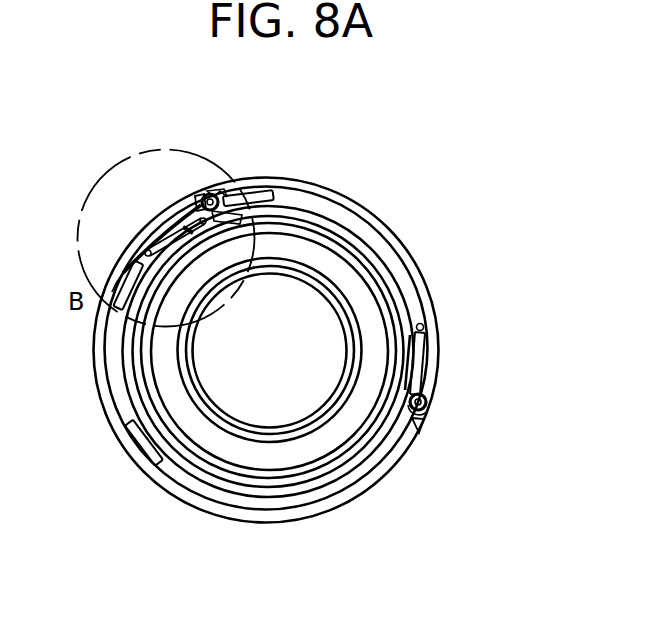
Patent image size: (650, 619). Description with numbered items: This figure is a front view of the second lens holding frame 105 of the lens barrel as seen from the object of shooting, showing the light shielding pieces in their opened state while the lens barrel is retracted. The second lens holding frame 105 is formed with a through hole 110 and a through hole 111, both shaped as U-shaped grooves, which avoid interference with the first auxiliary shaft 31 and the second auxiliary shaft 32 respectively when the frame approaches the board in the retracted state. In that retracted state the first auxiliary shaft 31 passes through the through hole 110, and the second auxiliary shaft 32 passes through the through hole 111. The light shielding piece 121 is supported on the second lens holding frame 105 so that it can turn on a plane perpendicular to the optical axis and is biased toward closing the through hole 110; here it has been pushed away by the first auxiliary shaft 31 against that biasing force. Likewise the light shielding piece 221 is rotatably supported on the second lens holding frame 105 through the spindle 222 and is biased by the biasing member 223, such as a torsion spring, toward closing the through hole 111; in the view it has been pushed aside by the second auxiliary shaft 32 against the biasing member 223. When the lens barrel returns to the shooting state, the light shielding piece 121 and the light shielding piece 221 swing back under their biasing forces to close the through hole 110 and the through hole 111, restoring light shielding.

The second lens holding frame 105 is at (380, 222).
The through hole 110 is at (208, 194).
The first auxiliary shaft 31 is at (204, 194).
The light shielding piece 121 is at (232, 186).
The spindle 222 is at (425, 329).
The biasing member 223 is at (428, 349).
The second auxiliary shaft 32 is at (428, 403).
The through hole 111 is at (429, 409).
The light shielding piece 221 is at (416, 432).